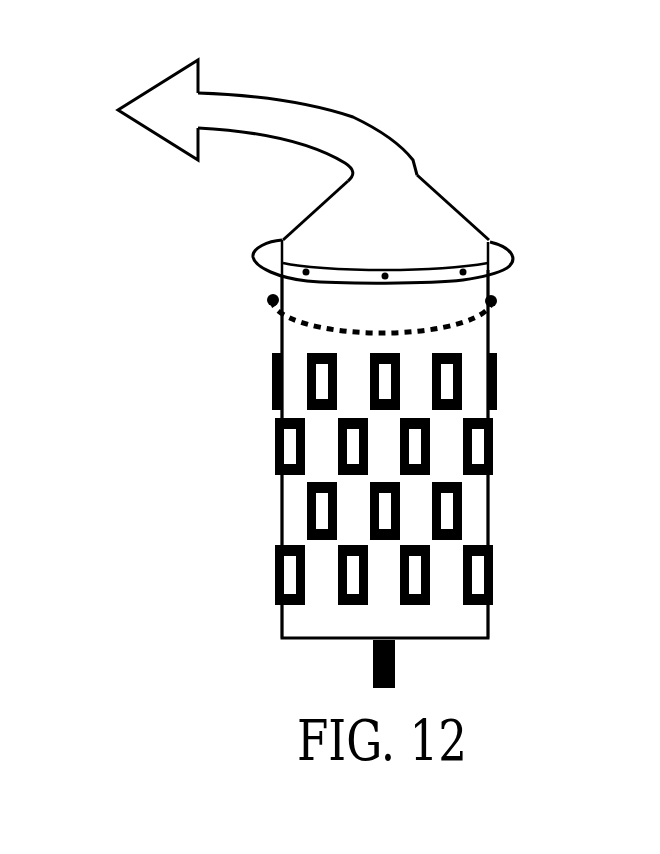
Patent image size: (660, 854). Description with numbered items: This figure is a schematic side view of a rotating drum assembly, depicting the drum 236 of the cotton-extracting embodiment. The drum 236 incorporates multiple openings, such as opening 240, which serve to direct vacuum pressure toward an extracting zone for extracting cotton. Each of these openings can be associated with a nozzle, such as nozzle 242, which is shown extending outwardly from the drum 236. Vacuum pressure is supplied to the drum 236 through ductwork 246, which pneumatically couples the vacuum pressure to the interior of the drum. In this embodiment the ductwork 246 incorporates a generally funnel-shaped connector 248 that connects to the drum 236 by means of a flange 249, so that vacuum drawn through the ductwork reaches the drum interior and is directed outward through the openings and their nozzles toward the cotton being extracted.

The drum 236 is at (228, 365).
The opening 240 is at (493, 442).
The nozzle 242 is at (495, 380).
The ductwork 246 is at (371, 139).
The funnel-shaped connector 248 is at (443, 212).
The flange 249 is at (507, 257).